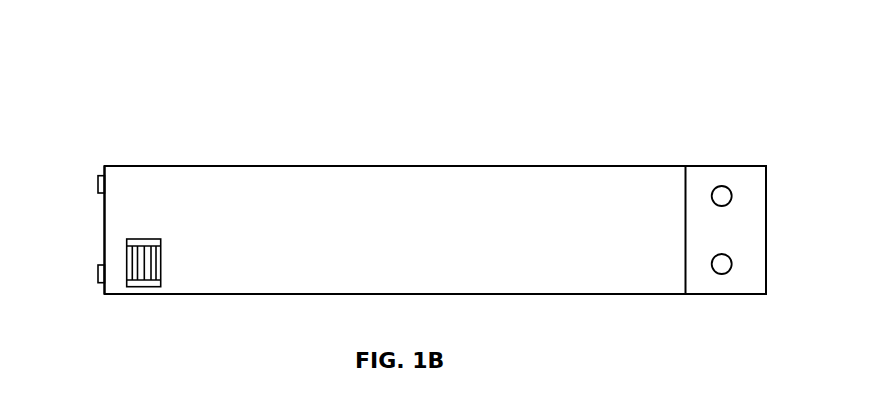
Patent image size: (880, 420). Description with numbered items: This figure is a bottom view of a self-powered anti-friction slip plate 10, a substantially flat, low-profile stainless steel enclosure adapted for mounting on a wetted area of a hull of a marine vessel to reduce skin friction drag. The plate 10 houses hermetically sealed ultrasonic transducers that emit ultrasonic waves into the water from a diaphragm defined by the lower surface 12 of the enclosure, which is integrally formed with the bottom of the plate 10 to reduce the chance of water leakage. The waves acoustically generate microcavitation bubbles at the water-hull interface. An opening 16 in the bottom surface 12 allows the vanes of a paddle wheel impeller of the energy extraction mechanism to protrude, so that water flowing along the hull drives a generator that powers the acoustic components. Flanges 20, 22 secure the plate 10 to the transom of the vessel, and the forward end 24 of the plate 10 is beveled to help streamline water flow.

The slip plate 10 is at (143, 106).
The lower surface 12 is at (441, 232).
The opening 16 is at (161, 262).
The flange 20 is at (98, 274).
The flange 22 is at (98, 184).
The forward end 24 is at (738, 157).